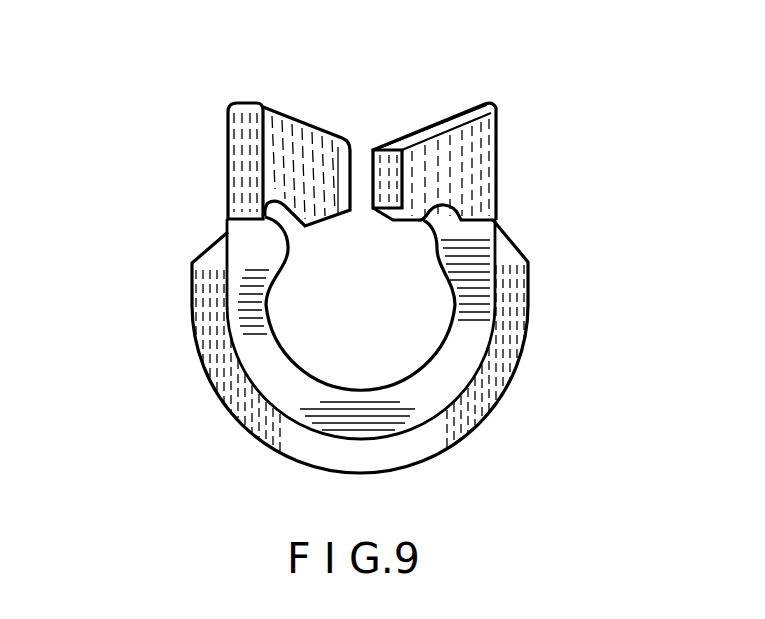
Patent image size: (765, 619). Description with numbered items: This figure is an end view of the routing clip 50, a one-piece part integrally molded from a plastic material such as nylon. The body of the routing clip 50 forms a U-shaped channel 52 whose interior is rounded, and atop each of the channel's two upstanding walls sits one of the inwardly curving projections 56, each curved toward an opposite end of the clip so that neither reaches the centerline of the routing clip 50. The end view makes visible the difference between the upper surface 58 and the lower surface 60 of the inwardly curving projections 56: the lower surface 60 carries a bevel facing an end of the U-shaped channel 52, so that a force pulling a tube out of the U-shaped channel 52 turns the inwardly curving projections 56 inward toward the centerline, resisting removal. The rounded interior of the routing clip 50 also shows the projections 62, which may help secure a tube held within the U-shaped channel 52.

The routing clip 50 is at (140, 181).
The U-shaped channel 52 is at (380, 398).
The inwardly curving projections 56 is at (228, 150).
The upper surface 58 is at (423, 135).
The lower surface 60 is at (393, 222).
The projections 62 is at (278, 236).